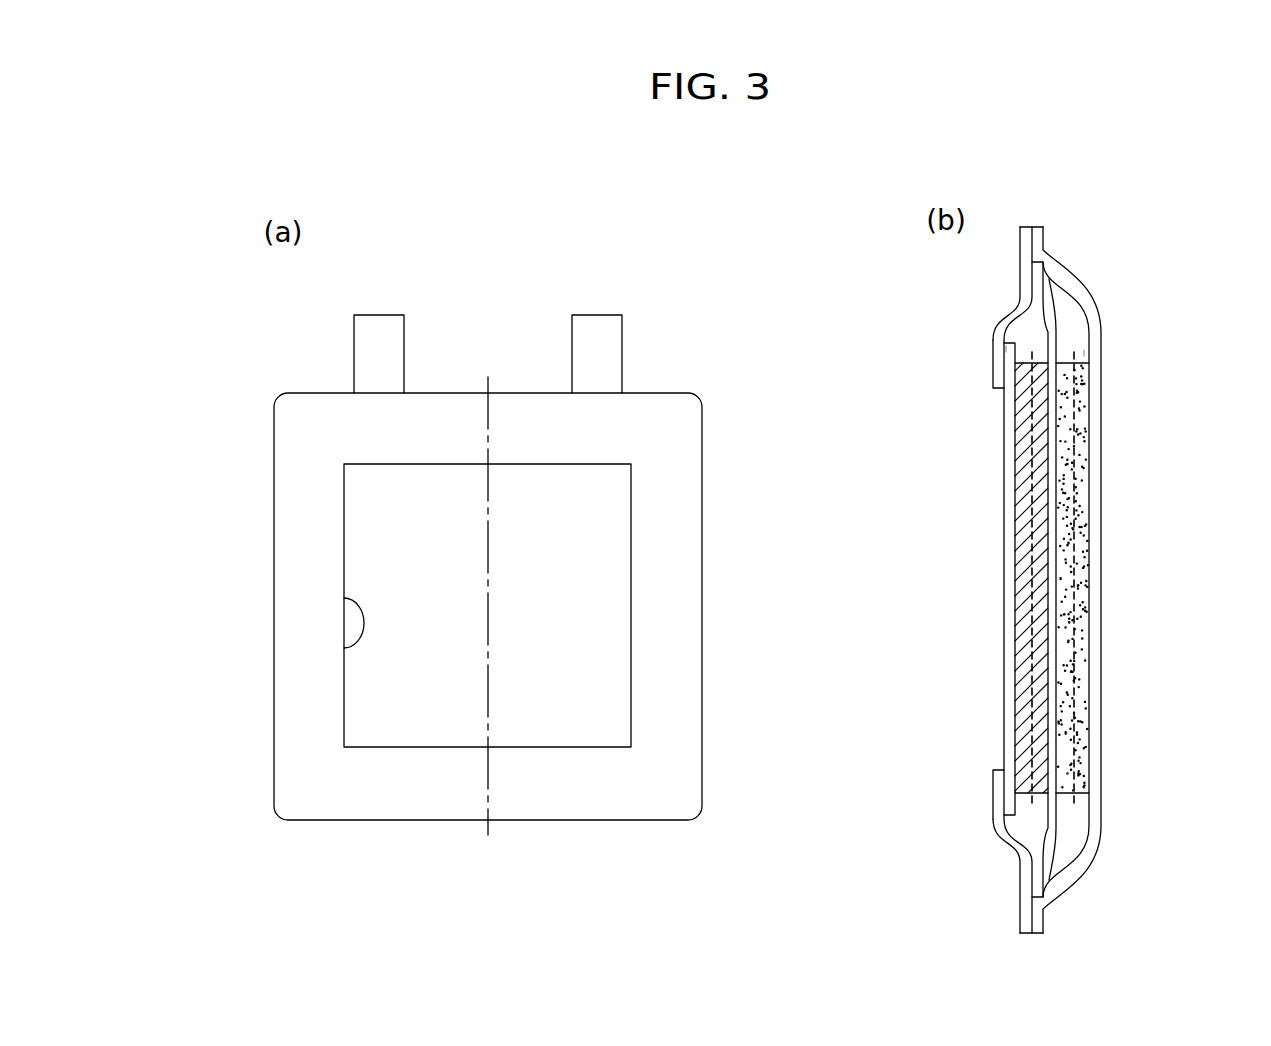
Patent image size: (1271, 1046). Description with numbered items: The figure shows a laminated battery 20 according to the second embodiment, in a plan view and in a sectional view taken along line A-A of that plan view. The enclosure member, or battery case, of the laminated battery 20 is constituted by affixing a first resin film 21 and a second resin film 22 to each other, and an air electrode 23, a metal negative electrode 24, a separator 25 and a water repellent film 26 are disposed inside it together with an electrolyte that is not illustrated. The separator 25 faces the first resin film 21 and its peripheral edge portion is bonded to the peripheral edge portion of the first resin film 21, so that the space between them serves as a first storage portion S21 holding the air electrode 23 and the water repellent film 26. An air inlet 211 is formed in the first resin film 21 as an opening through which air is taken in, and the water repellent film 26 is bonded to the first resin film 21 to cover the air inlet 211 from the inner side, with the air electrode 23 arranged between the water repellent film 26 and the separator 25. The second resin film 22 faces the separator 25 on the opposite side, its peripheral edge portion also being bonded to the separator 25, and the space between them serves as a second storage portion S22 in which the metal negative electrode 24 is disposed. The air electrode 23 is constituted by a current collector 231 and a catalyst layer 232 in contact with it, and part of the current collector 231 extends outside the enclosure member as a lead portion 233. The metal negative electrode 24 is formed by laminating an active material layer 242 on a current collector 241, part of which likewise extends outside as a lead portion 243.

The laminated battery 20 is at (678, 334).
The first resin film 21 is at (295, 462).
The air inlet 211 is at (343, 598).
The second resin film 22 is at (1098, 803).
The air electrode 23 is at (908, 505).
The current collector 231 is at (1032, 517).
The catalyst layer 232 is at (1024, 586).
The lead portion 233 is at (380, 330).
The metal negative electrode 24 is at (1192, 455).
The current collector 241 is at (1078, 470).
The active material layer 242 is at (1080, 537).
The lead portion 243 is at (598, 330).
The separator 25 is at (1052, 828).
The water repellent film 26 is at (376, 538).
The first storage portion S21 is at (1008, 330).
The second storage portion S22 is at (1082, 346).